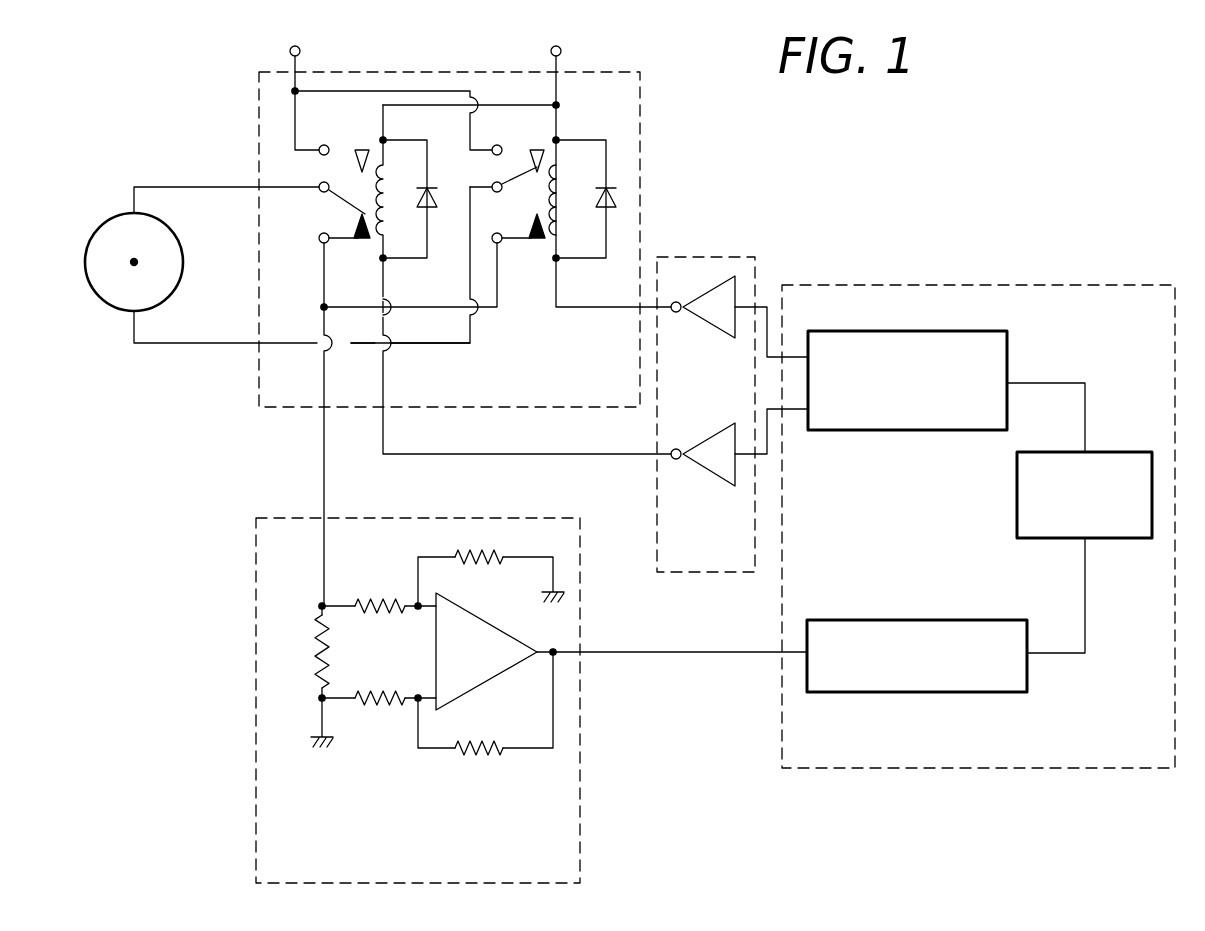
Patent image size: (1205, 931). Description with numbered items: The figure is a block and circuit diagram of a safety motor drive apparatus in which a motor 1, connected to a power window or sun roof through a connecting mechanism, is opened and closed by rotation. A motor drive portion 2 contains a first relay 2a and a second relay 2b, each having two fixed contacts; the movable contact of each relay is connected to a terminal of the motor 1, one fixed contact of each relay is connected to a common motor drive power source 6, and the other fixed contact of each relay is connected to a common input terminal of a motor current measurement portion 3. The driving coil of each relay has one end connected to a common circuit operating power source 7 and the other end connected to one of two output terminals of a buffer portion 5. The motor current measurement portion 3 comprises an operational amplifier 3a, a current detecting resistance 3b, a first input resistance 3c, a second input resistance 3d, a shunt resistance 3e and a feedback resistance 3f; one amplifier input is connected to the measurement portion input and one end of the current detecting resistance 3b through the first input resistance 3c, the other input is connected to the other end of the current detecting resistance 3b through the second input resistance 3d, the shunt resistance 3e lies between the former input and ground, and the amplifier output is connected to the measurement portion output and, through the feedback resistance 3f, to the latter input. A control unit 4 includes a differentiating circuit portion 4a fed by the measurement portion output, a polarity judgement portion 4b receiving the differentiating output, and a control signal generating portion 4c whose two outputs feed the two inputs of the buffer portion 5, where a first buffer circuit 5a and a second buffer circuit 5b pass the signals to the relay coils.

The motor 1 is at (99, 303).
The motor drive portion 2 is at (258, 107).
The first relay 2a is at (341, 179).
The second relay 2b is at (518, 179).
The motor current measurement portion 3 is at (256, 568).
The operational amplifier 3a is at (488, 620).
The current detecting resistance 3b is at (316, 648).
The first input resistance 3c is at (386, 600).
The second input resistance 3d is at (375, 705).
The shunt resistance 3e is at (480, 557).
The feedback resistance 3f is at (476, 742).
The control unit 4 is at (1030, 285).
The differentiating circuit portion 4a is at (878, 620).
The polarity judgement portion 4b is at (1017, 500).
The control signal generating portion 4c is at (862, 331).
The buffer portion 5 is at (680, 257).
The first buffer circuit 5a is at (701, 322).
The second buffer circuit 5b is at (701, 440).
The motor drive power source 6 is at (290, 51).
The circuit operating power source 7 is at (561, 51).